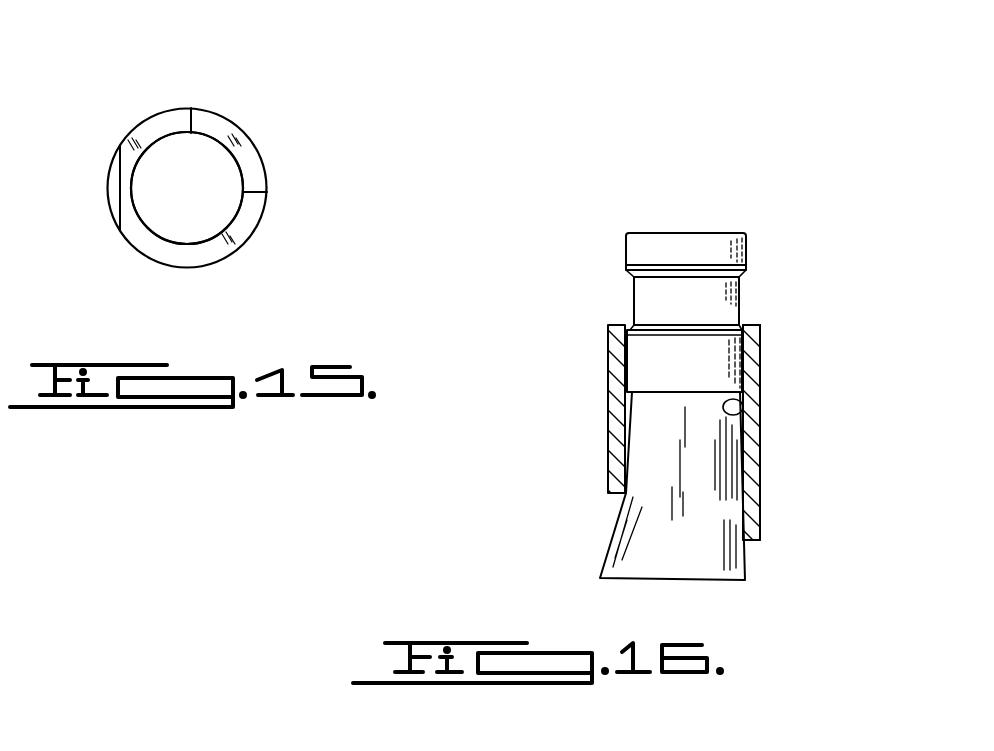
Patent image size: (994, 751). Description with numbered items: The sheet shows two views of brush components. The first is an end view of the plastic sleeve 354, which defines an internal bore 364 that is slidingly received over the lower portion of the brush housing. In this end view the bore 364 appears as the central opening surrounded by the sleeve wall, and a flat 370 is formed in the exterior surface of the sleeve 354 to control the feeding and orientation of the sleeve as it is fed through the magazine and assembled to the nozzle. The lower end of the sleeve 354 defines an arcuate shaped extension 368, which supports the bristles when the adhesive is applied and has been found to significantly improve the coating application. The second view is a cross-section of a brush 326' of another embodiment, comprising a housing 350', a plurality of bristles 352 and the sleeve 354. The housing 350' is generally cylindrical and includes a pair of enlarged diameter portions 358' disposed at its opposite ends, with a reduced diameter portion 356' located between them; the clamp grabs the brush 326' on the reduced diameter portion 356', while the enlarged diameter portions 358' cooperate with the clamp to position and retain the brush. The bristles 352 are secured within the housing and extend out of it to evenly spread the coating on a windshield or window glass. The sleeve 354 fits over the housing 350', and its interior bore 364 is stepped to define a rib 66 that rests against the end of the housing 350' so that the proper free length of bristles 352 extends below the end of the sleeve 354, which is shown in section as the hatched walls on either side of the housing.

In FIG. 15, the sleeve 354 is at (303, 158).
In FIG. 16, the sleeve 354 is at (618, 402).
In FIG. 15, the arcuate shaped extension 368 is at (215, 123).
In FIG. 16, the arcuate shaped extension 368 is at (757, 503).
In FIG. 15, the flat 370 is at (120, 194).
In FIG. 15, the internal bore 364 is at (166, 240).
In FIG. 16, the brush 326' is at (800, 186).
In FIG. 16, the enlarged diameter portions 358' is at (624, 287).
In FIG. 16, the reduced diameter portion 356' is at (632, 298).
In FIG. 16, the housing 350' is at (750, 289).
In FIG. 16, the rib 66 is at (740, 403).
In FIG. 16, the bristles 352 is at (735, 567).